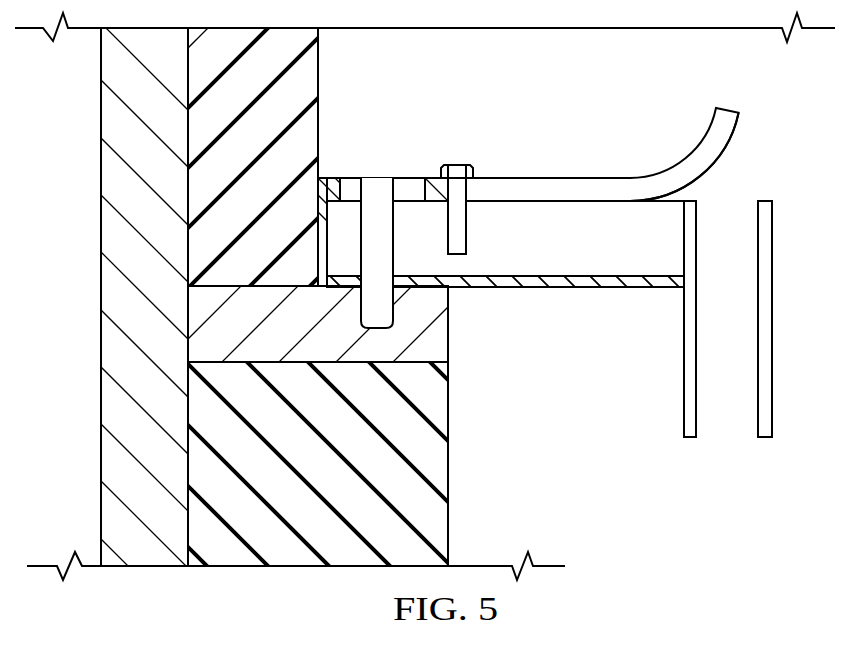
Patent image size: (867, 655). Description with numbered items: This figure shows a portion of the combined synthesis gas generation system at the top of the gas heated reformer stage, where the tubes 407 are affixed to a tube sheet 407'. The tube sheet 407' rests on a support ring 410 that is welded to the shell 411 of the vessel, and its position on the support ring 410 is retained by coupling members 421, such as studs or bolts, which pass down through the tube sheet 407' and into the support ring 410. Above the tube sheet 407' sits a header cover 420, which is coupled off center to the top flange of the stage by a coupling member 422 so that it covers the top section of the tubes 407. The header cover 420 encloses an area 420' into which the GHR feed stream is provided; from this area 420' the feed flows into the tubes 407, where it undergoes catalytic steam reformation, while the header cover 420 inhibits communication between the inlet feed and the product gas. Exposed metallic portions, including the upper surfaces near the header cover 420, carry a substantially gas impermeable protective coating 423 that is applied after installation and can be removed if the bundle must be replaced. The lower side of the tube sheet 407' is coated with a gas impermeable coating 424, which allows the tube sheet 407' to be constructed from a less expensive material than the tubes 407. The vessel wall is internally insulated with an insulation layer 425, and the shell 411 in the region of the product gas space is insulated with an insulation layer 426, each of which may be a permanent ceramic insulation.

The tubes 407 is at (728, 319).
The tube sheet 407' is at (497, 163).
The support ring 410 is at (333, 336).
The shell 411 is at (164, 311).
The header cover 420 is at (698, 129).
The area enclosed by the header cover 420' is at (710, 157).
The coupling members 421 is at (378, 187).
The coupling member 422 is at (457, 165).
The protective coating 423 is at (597, 178).
The gas impermeable coating 424 is at (568, 289).
The insulation layer 425 is at (338, 477).
The insulation layer 426 is at (274, 170).